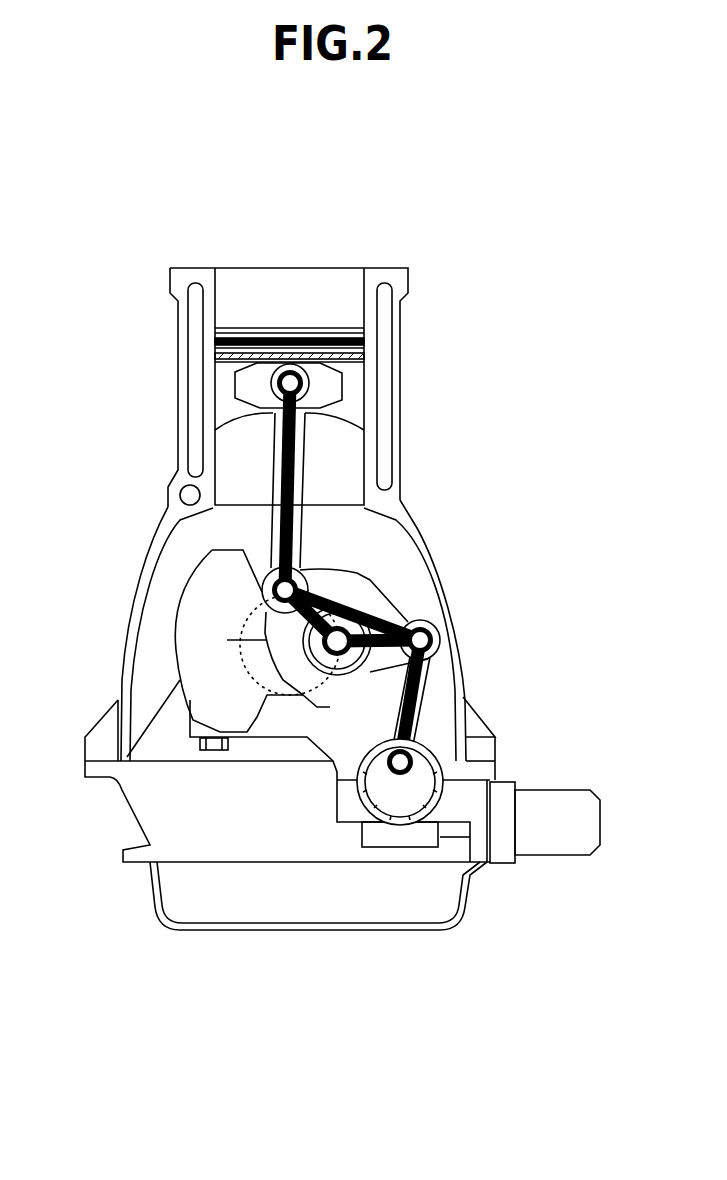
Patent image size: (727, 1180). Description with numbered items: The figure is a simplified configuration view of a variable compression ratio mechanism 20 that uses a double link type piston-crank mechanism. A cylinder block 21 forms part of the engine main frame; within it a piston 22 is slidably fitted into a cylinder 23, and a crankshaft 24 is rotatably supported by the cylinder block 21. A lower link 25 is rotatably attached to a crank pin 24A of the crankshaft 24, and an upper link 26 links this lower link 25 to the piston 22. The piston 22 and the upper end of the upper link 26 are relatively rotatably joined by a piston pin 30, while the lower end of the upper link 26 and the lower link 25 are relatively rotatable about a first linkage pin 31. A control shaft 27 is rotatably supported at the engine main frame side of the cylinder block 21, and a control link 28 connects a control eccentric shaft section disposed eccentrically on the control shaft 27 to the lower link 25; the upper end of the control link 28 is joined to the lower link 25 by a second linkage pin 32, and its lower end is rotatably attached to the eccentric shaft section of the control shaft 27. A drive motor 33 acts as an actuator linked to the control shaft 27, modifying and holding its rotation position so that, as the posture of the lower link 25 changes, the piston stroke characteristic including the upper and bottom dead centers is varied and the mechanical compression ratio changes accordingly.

The variable compression ratio mechanism 20 is at (462, 326).
The cylinder block 21 is at (392, 283).
The piston 22 is at (225, 380).
The cylinder 23 is at (216, 290).
The crankshaft 24 is at (208, 602).
The crank pin 24A is at (347, 657).
The lower link 25 is at (363, 602).
The upper link 26 is at (278, 457).
The control shaft 27 is at (413, 775).
The control link 28 is at (418, 700).
The piston pin 30 is at (292, 366).
The first linkage pin 31 is at (280, 593).
The second linkage pin 32 is at (430, 637).
The drive motor 33 is at (530, 802).